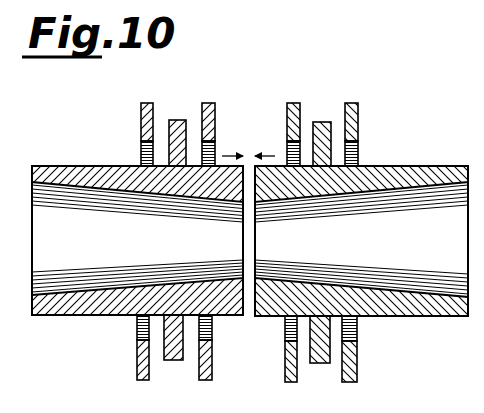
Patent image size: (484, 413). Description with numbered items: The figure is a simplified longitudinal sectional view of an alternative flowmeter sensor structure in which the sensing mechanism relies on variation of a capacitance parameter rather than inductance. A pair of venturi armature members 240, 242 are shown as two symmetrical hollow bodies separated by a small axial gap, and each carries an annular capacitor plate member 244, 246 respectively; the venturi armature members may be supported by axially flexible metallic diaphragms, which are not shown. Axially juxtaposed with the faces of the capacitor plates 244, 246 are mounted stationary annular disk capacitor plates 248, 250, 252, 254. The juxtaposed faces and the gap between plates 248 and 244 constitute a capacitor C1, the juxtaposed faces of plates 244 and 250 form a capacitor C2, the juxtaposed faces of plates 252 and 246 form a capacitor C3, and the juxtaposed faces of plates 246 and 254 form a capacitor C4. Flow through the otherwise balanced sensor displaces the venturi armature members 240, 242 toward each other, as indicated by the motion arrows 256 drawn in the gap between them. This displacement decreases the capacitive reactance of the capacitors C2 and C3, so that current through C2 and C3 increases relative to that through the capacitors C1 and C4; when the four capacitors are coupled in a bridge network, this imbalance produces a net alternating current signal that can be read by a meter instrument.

The venturi armature member 240 is at (49, 166).
The venturi armature member 242 is at (400, 166).
The annular capacitor plate member 244 is at (169, 149).
The annular capacitor plate member 246 is at (331, 147).
The stationary annular disk capacitor plate 248 is at (141, 110).
The stationary annular disk capacitor plate 250 is at (215, 103).
The stationary annular disk capacitor plate 252 is at (293, 103).
The stationary annular disk capacitor plate 254 is at (358, 108).
The motion arrows 256 is at (262, 152).
The capacitor C1 is at (161, 128).
The capacitor C2 is at (195, 127).
The capacitor C3 is at (306, 130).
The capacitor C4 is at (338, 130).